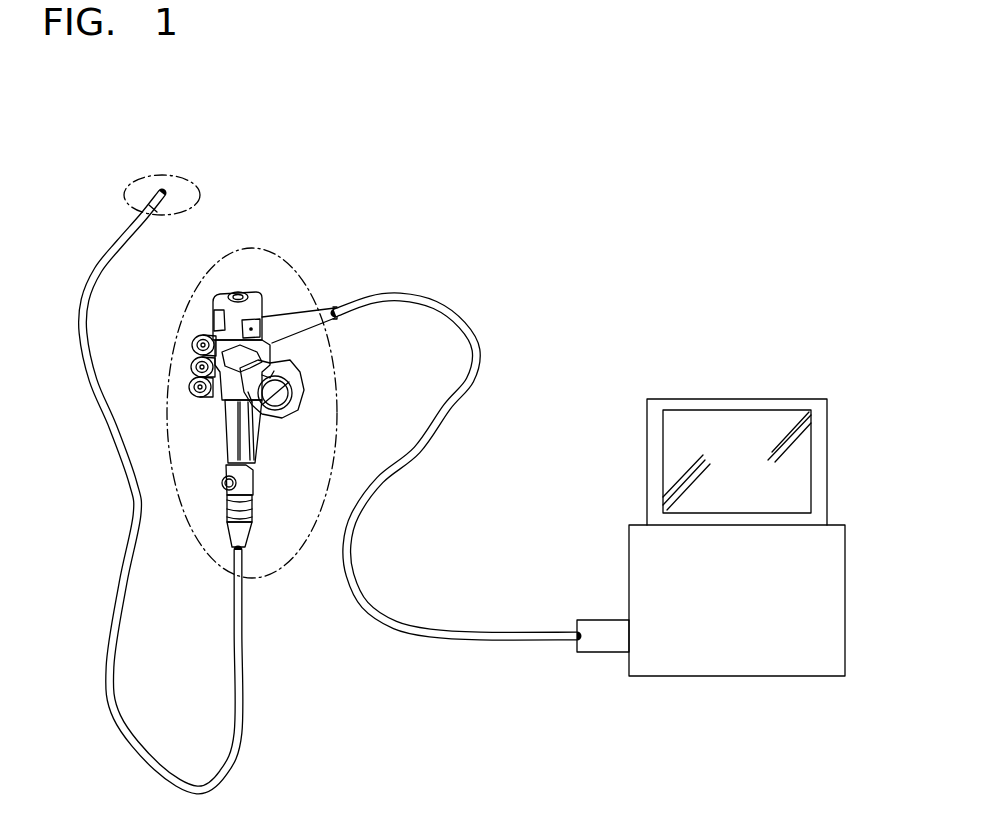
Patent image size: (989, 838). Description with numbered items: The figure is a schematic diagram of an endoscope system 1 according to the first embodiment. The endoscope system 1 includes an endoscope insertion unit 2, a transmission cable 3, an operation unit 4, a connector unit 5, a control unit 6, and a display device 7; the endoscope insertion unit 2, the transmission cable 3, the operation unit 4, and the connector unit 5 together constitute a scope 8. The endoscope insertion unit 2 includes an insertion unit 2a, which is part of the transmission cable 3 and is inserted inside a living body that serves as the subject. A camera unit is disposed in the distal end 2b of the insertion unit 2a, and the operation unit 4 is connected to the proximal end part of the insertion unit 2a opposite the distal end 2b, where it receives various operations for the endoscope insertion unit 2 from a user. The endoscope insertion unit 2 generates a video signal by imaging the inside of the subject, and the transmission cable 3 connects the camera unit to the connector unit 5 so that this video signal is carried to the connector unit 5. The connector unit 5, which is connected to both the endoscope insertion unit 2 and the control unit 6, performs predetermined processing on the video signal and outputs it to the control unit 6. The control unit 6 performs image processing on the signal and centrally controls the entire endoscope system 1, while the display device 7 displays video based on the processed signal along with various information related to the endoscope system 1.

The endoscope system 1 is at (665, 176).
The endoscope insertion unit 2 is at (283, 114).
The insertion unit 2a is at (110, 243).
The distal end 2b is at (162, 174).
The transmission cable 3 is at (414, 296).
The operation unit 4 is at (283, 252).
The connector unit 5 is at (597, 619).
The control unit 6 is at (735, 677).
The display device 7 is at (736, 398).
The scope 8 is at (407, 176).